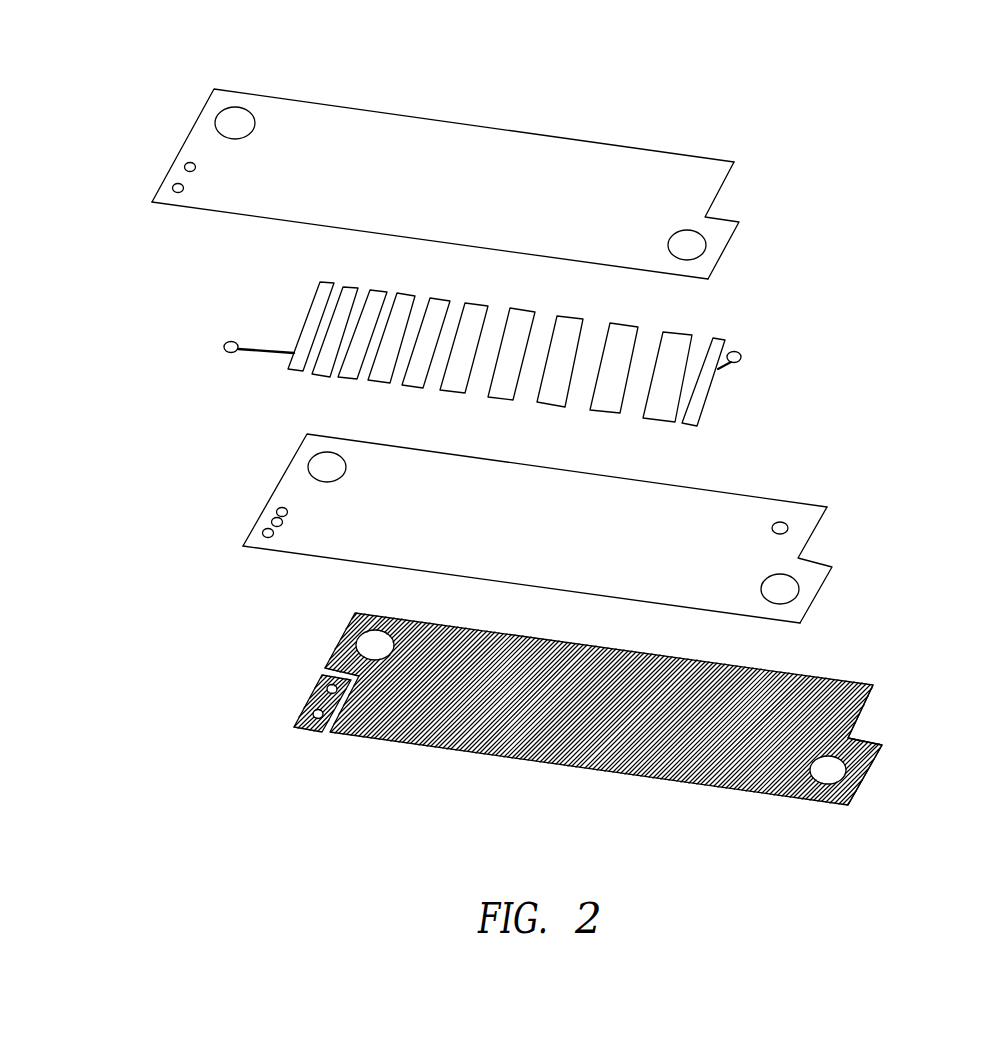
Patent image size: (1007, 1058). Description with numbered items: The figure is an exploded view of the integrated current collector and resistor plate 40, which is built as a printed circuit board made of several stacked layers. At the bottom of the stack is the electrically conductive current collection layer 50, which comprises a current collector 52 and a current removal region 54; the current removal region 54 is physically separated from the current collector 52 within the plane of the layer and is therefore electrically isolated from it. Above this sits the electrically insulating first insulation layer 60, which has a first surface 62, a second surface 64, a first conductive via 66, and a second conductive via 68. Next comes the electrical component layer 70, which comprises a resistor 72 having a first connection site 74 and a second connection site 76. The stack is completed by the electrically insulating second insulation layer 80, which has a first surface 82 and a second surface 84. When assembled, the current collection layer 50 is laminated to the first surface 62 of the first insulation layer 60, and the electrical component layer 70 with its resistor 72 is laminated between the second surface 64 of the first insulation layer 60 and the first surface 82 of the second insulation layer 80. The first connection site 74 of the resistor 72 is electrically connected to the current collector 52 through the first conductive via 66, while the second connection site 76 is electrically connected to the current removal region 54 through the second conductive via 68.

The integrated current collector and resistor plate 40 is at (813, 90).
The current collection layer 50 is at (660, 803).
The current collector 52 is at (865, 707).
The current removal region 54 is at (310, 695).
The first insulation layer 60 is at (817, 532).
The first surface 62 is at (715, 615).
The second surface 64 is at (688, 525).
The first conductive via 66 is at (782, 522).
The second conductive via 68 is at (273, 520).
The electrical component layer 70 is at (603, 428).
The resistor 72 is at (678, 333).
The first connection site 74 is at (741, 356).
The second connection site 76 is at (224, 345).
The second insulation layer 80 is at (722, 192).
The first surface 82 is at (598, 267).
The second surface 84 is at (408, 142).